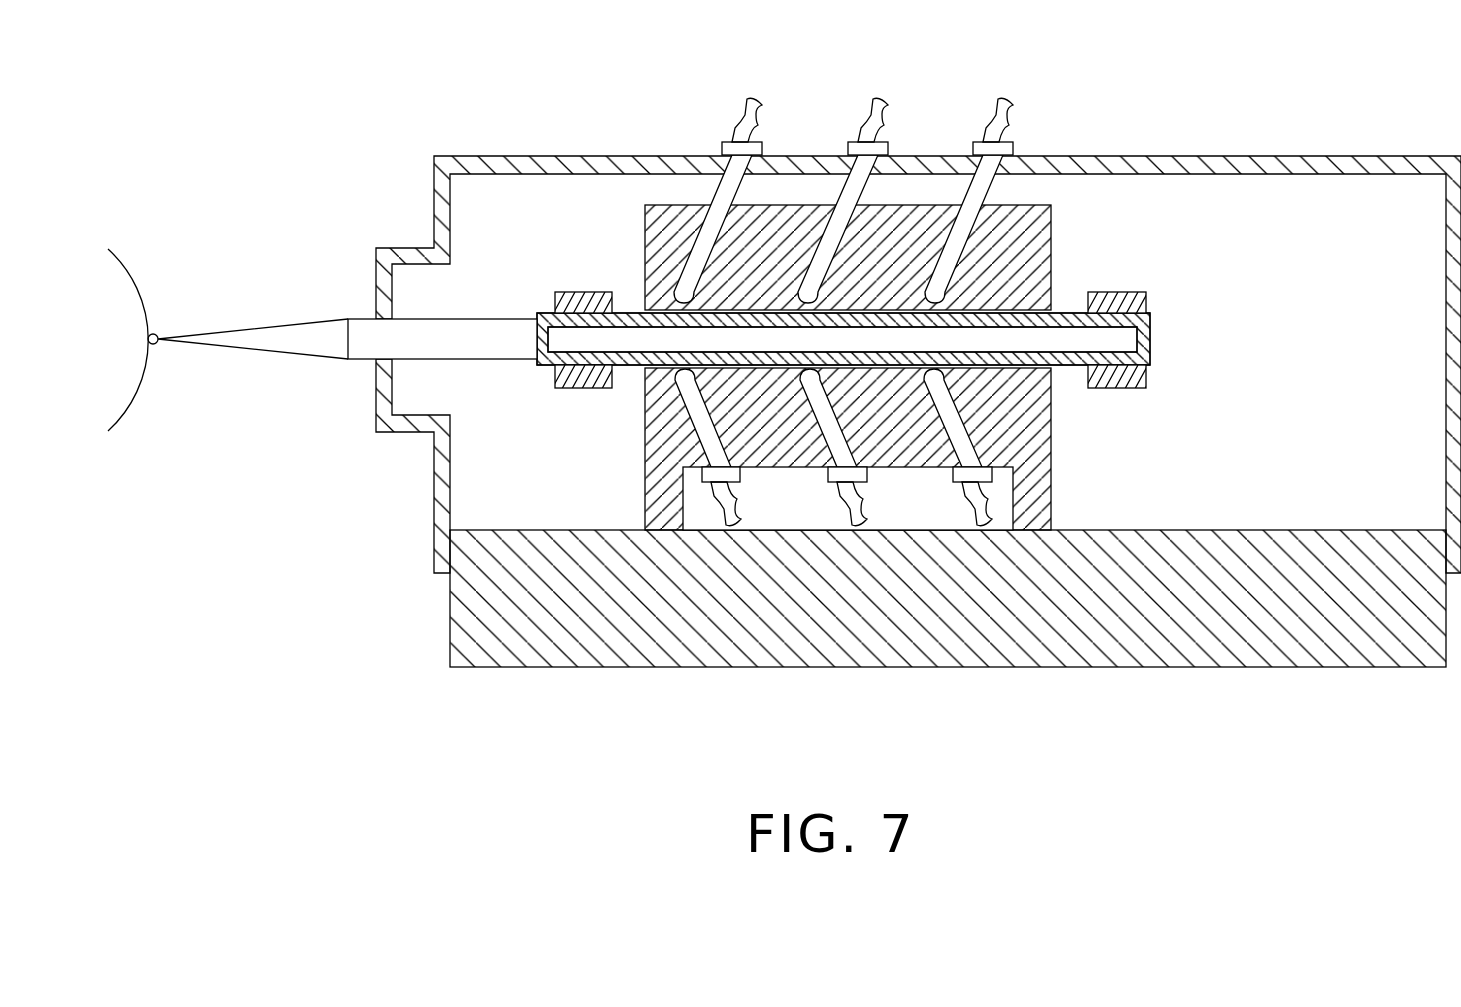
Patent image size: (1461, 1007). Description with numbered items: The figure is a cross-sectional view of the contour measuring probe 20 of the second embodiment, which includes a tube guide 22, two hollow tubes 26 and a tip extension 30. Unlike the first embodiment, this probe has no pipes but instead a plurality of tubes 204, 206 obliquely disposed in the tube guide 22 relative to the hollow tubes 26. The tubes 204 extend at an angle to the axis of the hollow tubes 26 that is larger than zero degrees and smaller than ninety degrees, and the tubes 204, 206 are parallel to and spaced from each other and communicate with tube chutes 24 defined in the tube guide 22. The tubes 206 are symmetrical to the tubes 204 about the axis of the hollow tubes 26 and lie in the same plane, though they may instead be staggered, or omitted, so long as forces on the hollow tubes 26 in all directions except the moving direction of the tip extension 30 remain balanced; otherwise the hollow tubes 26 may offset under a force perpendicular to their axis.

The contour measuring probe 20 is at (422, 117).
The tube guide 22 is at (908, 235).
The tube chutes 24 is at (1030, 368).
The hollow tubes 26 is at (1146, 338).
The tip extension 30 is at (430, 338).
The tubes 204 is at (843, 218).
The tubes 206 is at (695, 413).